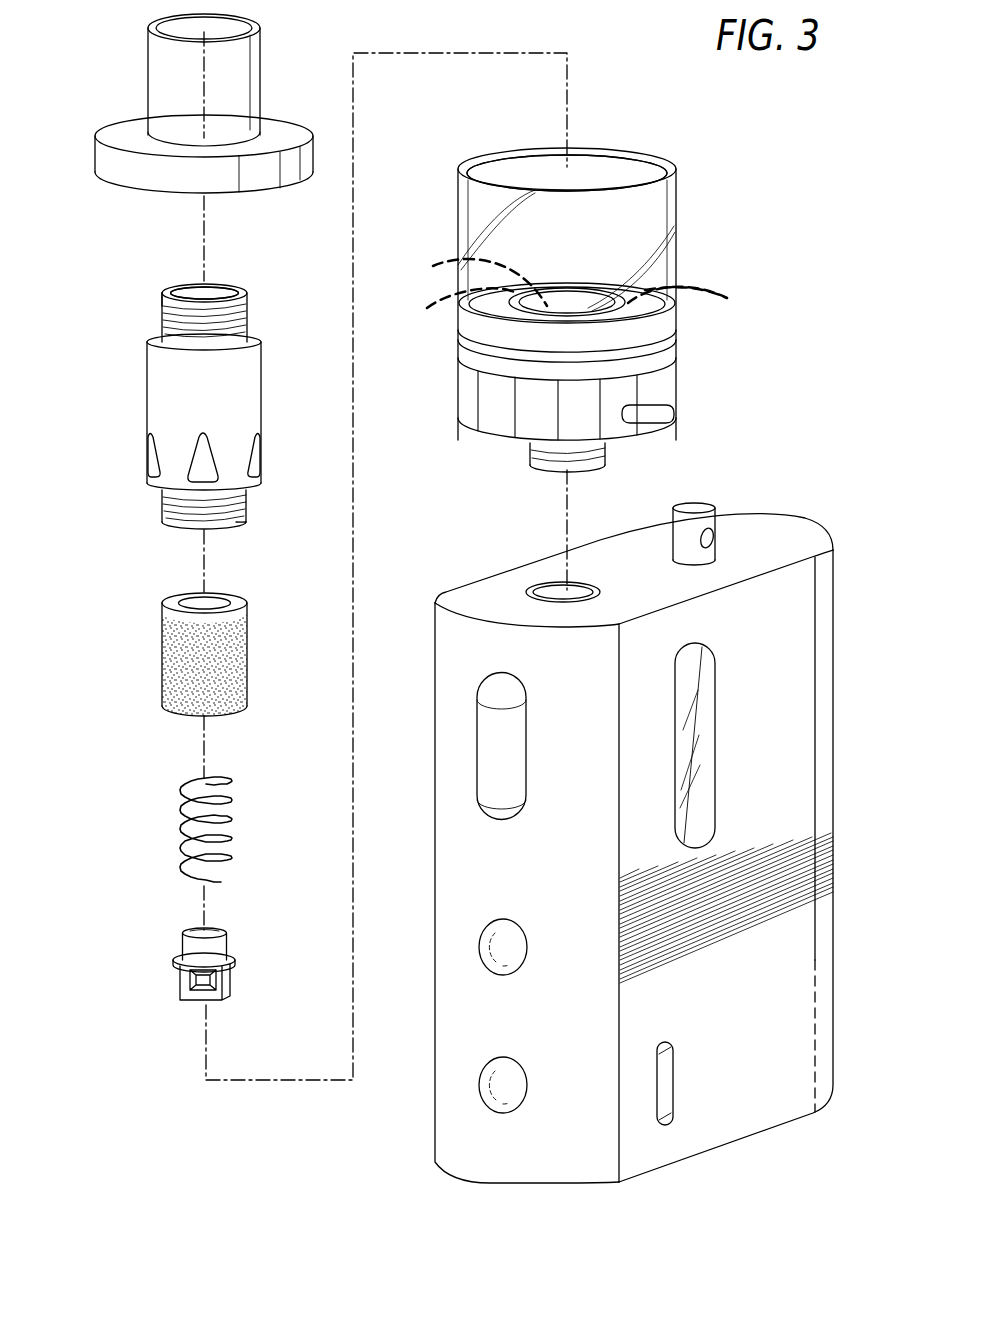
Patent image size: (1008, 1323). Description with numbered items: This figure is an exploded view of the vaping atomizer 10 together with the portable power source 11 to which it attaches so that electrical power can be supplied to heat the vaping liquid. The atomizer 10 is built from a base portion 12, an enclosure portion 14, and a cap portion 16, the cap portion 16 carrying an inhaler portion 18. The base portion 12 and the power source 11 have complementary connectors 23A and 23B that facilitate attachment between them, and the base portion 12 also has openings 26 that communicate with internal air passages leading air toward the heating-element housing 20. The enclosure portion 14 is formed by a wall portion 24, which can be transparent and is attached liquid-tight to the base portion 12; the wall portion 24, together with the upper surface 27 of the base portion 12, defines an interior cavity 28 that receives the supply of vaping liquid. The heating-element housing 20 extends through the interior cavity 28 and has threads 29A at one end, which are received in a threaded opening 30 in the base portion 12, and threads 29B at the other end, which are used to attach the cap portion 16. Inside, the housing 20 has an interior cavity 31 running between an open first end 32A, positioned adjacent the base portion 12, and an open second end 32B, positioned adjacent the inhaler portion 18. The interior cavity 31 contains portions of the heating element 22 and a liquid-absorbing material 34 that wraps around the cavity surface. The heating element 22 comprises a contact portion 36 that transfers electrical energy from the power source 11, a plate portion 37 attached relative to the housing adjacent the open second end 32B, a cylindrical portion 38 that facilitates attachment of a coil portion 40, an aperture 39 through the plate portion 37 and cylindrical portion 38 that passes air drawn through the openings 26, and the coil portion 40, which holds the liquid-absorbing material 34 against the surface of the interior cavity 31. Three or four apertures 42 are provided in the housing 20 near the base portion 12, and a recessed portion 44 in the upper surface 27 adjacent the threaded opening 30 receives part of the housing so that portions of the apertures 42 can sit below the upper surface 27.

The vaping atomizer 10 is at (127, 585).
The portable power source 11 is at (561, 843).
The base portion 12 is at (678, 405).
The enclosure portion 14 is at (582, 293).
The cap portion 16 is at (148, 200).
The inhaler portion 18 is at (266, 66).
The heating-element housing 20 is at (199, 399).
The heating element 22 is at (193, 963).
The connector 23A is at (598, 455).
The connector 23B is at (548, 588).
The wall portion 24 is at (672, 262).
The openings 26 is at (612, 402).
The upper surface 27 is at (703, 297).
The interior cavity 28 is at (608, 182).
The threads 29A is at (186, 522).
The threads 29B is at (238, 322).
The threaded opening 30 is at (440, 266).
The interior cavity 31 is at (221, 290).
The open first end 32A is at (222, 527).
The open second end 32B is at (175, 294).
The liquid-absorbing material 34 is at (202, 660).
The contact portion 36 is at (228, 986).
The plate portion 37 is at (235, 962).
The cylindrical portion 38 is at (215, 952).
The aperture 39 is at (213, 928).
The coil portion 40 is at (232, 833).
The apertures 42 is at (197, 442).
The recessed portion 44 is at (427, 308).